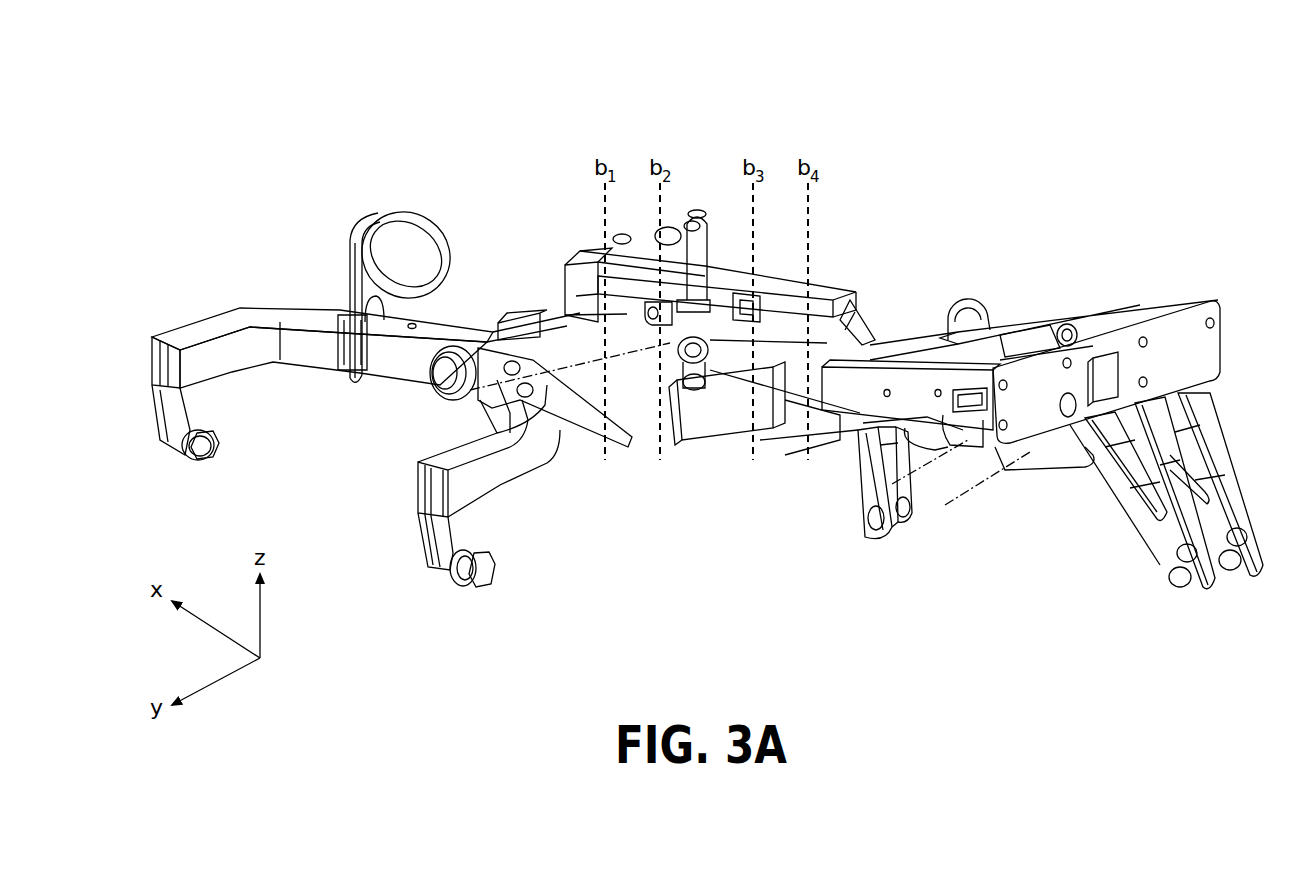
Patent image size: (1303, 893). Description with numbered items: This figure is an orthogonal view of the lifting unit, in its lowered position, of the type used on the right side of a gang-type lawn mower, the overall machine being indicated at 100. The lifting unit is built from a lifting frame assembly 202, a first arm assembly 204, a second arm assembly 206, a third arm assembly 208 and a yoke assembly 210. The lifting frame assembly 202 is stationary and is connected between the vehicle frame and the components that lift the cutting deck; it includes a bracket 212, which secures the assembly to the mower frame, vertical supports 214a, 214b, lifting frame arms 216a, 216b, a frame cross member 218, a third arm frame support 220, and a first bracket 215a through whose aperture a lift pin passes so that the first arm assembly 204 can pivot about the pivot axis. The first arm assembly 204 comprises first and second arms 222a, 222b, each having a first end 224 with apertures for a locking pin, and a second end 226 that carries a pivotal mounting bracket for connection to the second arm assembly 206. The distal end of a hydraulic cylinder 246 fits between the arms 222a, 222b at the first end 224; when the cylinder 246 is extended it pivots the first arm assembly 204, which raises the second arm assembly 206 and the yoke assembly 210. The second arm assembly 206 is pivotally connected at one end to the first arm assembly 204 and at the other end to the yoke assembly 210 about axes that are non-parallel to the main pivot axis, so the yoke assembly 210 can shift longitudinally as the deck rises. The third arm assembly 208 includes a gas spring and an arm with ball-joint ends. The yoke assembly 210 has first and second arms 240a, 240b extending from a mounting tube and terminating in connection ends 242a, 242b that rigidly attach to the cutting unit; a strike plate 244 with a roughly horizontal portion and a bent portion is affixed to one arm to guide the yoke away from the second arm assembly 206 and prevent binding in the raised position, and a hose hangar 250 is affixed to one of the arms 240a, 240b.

The vehicle chassis assembly 100 is at (386, 110).
The lifting frame assembly 202 is at (1164, 306).
The first arm assembly 204 is at (866, 320).
The second arm assembly 206 is at (745, 270).
The third arm assembly 208 is at (682, 276).
The yoke assembly 210 is at (206, 312).
The bracket 212 is at (1197, 363).
The vertical support 214a is at (1160, 530).
The vertical support 214b is at (1223, 510).
The first bracket 215a is at (835, 452).
The lifting frame arm 216a is at (853, 387).
The lifting frame arm 216b is at (1040, 320).
The frame cross member 218 is at (967, 353).
The third arm frame support 220 is at (720, 430).
The first arm 222a is at (848, 485).
The second arm 222b is at (902, 460).
The first end 224 is at (897, 533).
The second end 226 is at (830, 303).
The first arm 240a is at (302, 357).
The second arm 240b is at (500, 483).
The connection end 242a is at (178, 443).
The connection end 242b is at (447, 567).
The strike plate 244 is at (552, 390).
The hydraulic cylinder 246 is at (935, 502).
The hose hangar 250 is at (405, 212).